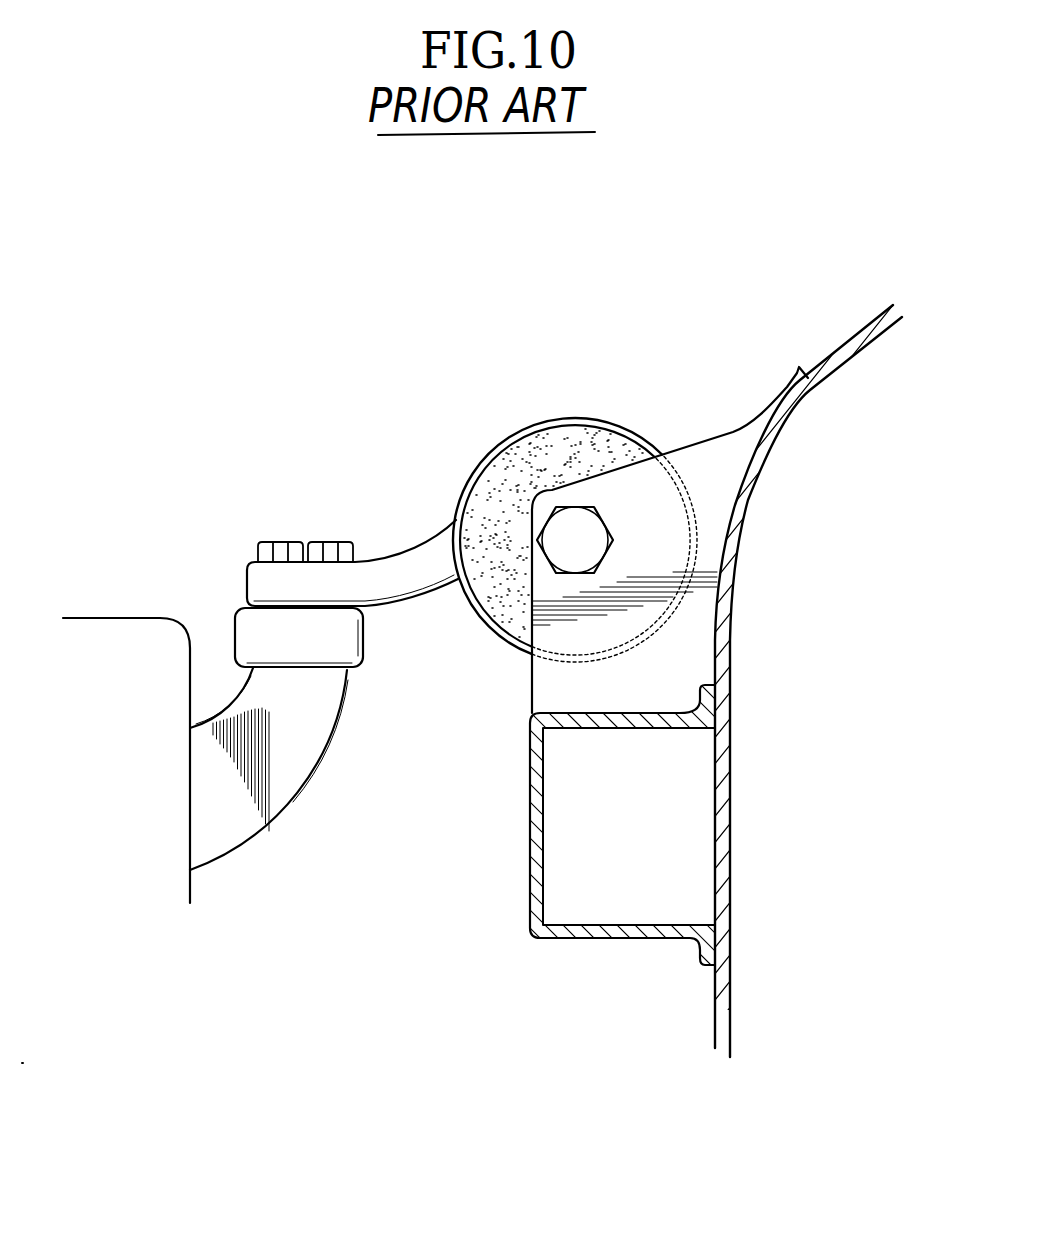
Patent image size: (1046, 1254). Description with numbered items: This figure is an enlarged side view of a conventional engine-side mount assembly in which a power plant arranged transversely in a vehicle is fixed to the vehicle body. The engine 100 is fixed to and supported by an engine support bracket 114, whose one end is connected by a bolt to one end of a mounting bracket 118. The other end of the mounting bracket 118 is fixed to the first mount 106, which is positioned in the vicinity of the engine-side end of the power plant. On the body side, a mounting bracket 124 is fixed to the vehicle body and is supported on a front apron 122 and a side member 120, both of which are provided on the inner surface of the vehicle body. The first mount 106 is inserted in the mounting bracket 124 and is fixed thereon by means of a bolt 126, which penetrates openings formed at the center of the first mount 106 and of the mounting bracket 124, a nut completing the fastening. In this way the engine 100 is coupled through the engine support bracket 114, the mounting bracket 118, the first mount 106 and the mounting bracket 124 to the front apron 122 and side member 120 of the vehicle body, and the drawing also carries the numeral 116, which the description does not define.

The engine 100 is at (128, 620).
The first mount 106 is at (600, 500).
The engine support bracket 114 is at (285, 758).
The rubber mount disc 116 is at (500, 490).
The mounting bracket 118 is at (408, 568).
The side member 120 is at (600, 940).
The front apron 122 is at (840, 352).
The mounting bracket 124 is at (712, 457).
The bolt 126 is at (568, 533).